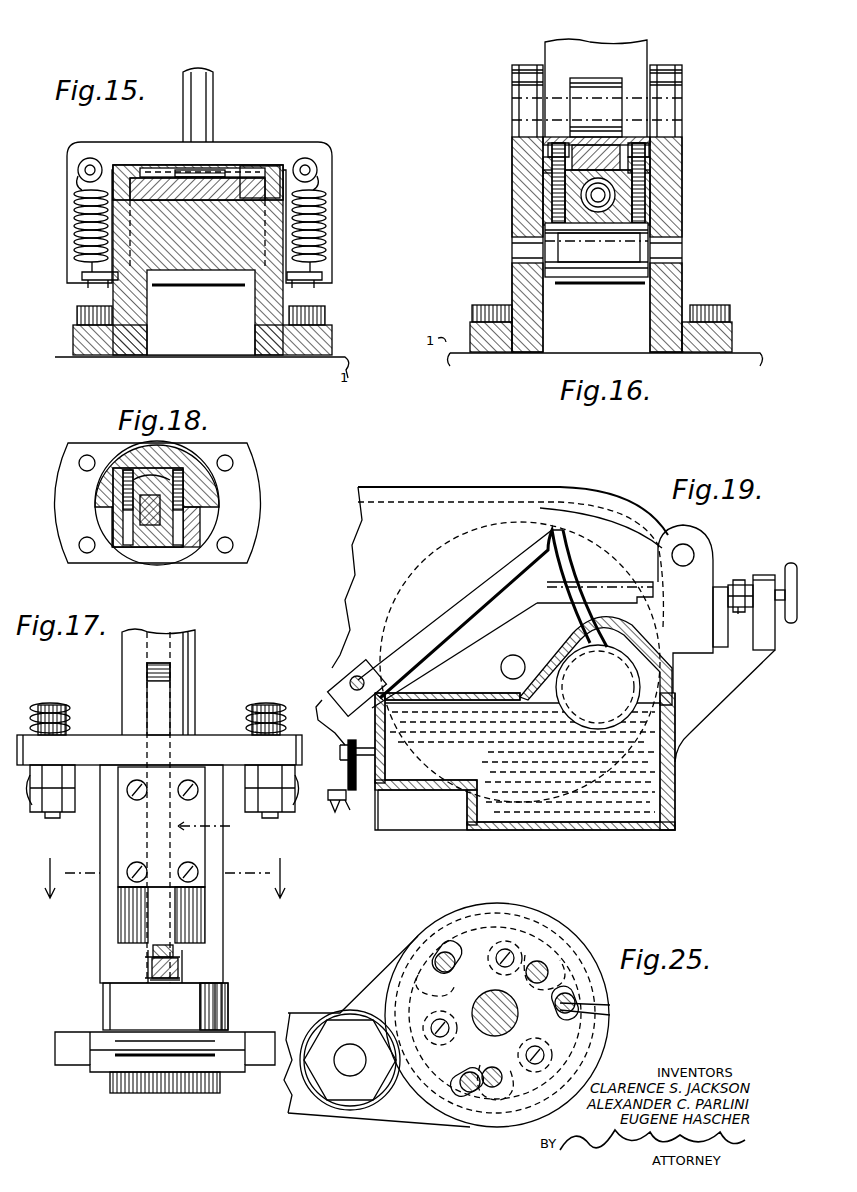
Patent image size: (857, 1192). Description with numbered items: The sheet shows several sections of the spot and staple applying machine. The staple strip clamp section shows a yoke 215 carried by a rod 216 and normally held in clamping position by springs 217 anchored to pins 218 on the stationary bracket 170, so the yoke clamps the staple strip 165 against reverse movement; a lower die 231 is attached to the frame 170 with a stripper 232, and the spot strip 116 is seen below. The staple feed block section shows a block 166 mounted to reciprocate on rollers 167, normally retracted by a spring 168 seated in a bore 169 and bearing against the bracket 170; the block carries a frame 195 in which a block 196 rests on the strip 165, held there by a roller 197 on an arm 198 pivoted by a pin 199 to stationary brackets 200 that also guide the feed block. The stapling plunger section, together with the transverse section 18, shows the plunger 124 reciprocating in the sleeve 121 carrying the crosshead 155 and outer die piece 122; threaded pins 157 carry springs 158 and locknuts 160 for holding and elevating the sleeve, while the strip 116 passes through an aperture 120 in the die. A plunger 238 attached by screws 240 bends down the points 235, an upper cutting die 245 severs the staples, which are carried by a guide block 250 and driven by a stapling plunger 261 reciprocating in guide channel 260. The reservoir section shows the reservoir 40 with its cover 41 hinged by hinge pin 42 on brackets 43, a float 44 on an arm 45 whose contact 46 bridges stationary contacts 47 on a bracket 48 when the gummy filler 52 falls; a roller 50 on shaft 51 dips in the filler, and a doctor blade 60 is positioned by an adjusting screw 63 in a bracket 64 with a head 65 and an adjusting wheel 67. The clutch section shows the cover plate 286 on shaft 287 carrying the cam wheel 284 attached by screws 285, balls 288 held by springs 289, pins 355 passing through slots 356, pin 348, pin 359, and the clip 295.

In FIG. 15, the rod 216 is at (205, 82).
In FIG. 15, the yoke 215 is at (158, 128).
In FIG. 15, the stripper 232 is at (240, 170).
In FIG. 17, the stripper 232 is at (152, 947).
In FIG. 15, the lower die 231 is at (265, 167).
In FIG. 17, the lower die 231 is at (158, 976).
In FIG. 15, the staple strip 165 is at (203, 152).
In FIG. 16, the staple strip 165 is at (573, 183).
In FIG. 17, the staple strip 165 is at (212, 966).
In FIG. 15, the springs 217 is at (75, 226).
In FIG. 15, the pins 218 is at (80, 284).
In FIG. 15, the stationary bracket 170 is at (193, 258).
In FIG. 15, the strip 116 is at (220, 288).
In FIG. 16, the strip 116 is at (628, 285).
In FIG. 17, the strip 116 is at (155, 1058).
In FIG. 16, the arm 198 is at (630, 55).
In FIG. 16, the stationary brackets 200 is at (522, 76).
In FIG. 16, the pin 199 is at (530, 96).
In FIG. 16, the roller 197 is at (580, 103).
In FIG. 16, the block 196 is at (625, 140).
In FIG. 16, the frame 195 is at (540, 163).
In FIG. 16, the bore 169 is at (624, 200).
In FIG. 16, the spring 168 is at (612, 203).
In FIG. 16, the block 166 is at (578, 230).
In FIG. 16, the rollers 167 is at (604, 258).
In FIG. 18, the guide channel 260 is at (148, 482).
In FIG. 18, the plunger 124 is at (176, 468).
In FIG. 17, the plunger 124 is at (190, 646).
In FIG. 18, the sleeve 121 is at (212, 488).
In FIG. 17, the sleeve 121 is at (216, 1004).
In FIG. 18, the stapling plunger 261 is at (135, 496).
In FIG. 17, the stapling plunger 261 is at (160, 700).
In FIG. 18, the screws 240 is at (122, 518).
In FIG. 17, the screws 240 is at (186, 798).
In FIG. 18, the upper cutting die 245 is at (160, 532).
In FIG. 17, the upper cutting die 245 is at (163, 916).
In FIG. 18, the plunger 238 is at (192, 542).
In FIG. 17, the plunger 238 is at (197, 846).
In FIG. 17, the threaded pins 157 is at (63, 690).
In FIG. 17, the springs 158 is at (70, 720).
In FIG. 17, the crosshead 155 is at (110, 749).
In FIG. 17, the locknuts 160 is at (36, 803).
In FIG. 17, the section line 18 is at (170, 875).
In FIG. 17, the points 235 is at (148, 956).
In FIG. 17, the staple guide block 250 is at (163, 978).
In FIG. 17, the aperture 120 is at (140, 1050).
In FIG. 17, the outer die piece 122 is at (170, 1080).
In FIG. 19, the roller 50 is at (437, 548).
In FIG. 19, the arm 45 is at (458, 594).
In FIG. 19, the hinge pin 42 is at (356, 676).
In FIG. 19, the shaft 51 is at (515, 650).
In FIG. 19, the contact 46 is at (386, 700).
In FIG. 19, the stationary contacts 47 is at (330, 696).
In FIG. 19, the brackets 43 is at (346, 748).
In FIG. 19, the bracket 48 is at (366, 765).
In FIG. 19, the float 44 is at (598, 687).
In FIG. 19, the cover 41 is at (648, 656).
In FIG. 19, the reservoir 40 is at (674, 740).
In FIG. 19, the gummy filler 52 is at (640, 796).
In FIG. 19, the doctor blade 60 is at (718, 590).
In FIG. 19, the adjusting screw 63 is at (748, 585).
In FIG. 19, the bracket 64 is at (769, 576).
In FIG. 19, the adjusting wheel 67 is at (795, 563).
In FIG. 19, the head 65 is at (738, 612).
In FIG. 25, the pins 355 is at (443, 952).
In FIG. 25, the slots 356 is at (456, 938).
In FIG. 25, the cam wheel 284 is at (516, 920).
In FIG. 25, the screws 285 is at (540, 937).
In FIG. 25, the pin 348 is at (542, 948).
In FIG. 25, the springs 289 is at (426, 992).
In FIG. 25, the balls 288 is at (425, 968).
In FIG. 25, the cover plate 286 is at (340, 1010).
In FIG. 25, the shaft 287 is at (495, 1002).
In FIG. 25, the pin 359 is at (488, 1070).
In FIG. 25, the clip 295 is at (300, 1097).